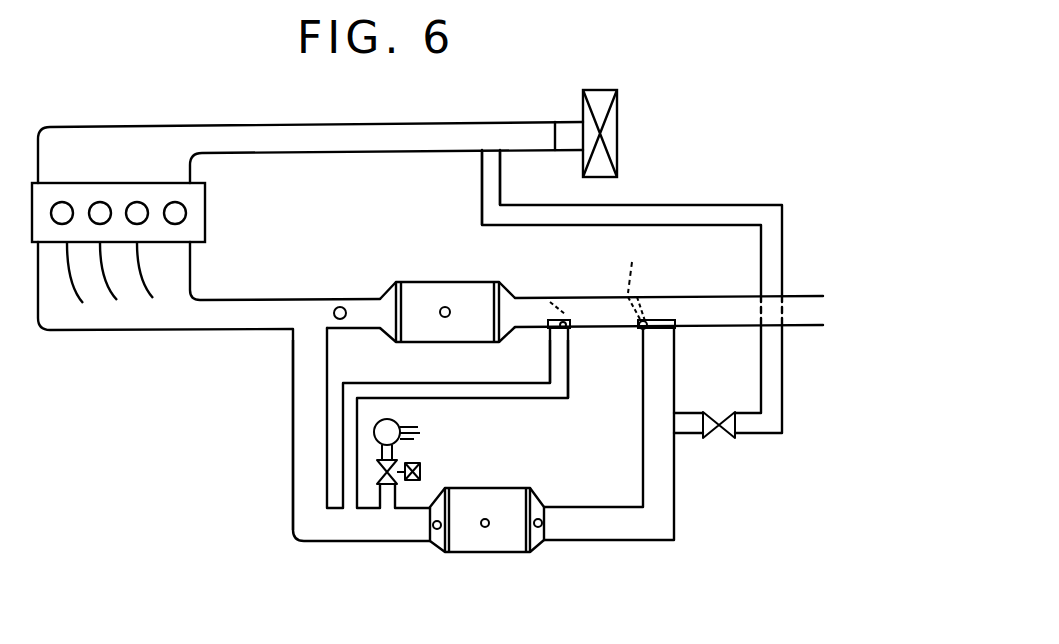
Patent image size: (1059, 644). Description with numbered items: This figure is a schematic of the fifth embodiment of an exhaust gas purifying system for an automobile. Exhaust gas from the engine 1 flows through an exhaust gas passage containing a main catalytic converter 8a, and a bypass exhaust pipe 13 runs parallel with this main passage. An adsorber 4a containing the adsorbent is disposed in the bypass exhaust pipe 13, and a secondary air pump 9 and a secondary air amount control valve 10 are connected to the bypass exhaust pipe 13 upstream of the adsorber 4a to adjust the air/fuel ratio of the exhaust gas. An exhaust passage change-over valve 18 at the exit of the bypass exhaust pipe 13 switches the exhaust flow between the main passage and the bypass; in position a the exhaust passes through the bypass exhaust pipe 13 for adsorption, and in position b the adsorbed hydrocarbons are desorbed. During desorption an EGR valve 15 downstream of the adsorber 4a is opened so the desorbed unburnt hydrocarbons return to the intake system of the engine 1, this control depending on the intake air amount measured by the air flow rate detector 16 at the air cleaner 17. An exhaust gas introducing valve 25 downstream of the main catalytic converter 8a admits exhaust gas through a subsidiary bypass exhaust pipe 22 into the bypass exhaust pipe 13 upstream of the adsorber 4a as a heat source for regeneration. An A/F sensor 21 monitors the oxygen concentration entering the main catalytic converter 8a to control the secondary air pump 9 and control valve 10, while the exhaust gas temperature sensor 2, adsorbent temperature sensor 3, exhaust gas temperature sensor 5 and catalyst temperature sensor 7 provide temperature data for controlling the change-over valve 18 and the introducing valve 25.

The engine 1 is at (196, 221).
The exhaust gas temperature sensor 2 is at (432, 543).
The adsorbent temperature sensor 3 is at (484, 528).
The adsorber 4a is at (508, 534).
The exhaust gas temperature sensor 5 is at (541, 531).
The catalyst temperature sensor 7 is at (444, 307).
The main catalytic converter 8a is at (413, 302).
The secondary air pump 9 is at (397, 418).
The secondary air amount control valve 10 is at (398, 463).
The bypass exhaust pipe 13 is at (307, 455).
The EGR valve 15 is at (723, 438).
The air flow rate detector 16 is at (570, 145).
The air cleaner 17 is at (612, 135).
The exhaust passage change-over valve 18 is at (645, 321).
The A/F sensor 21 is at (340, 306).
The subsidiary bypass exhaust pipe 22 is at (542, 402).
The exhaust gas introducing valve 25 is at (548, 297).
The position a is at (625, 262).
The position b is at (660, 327).